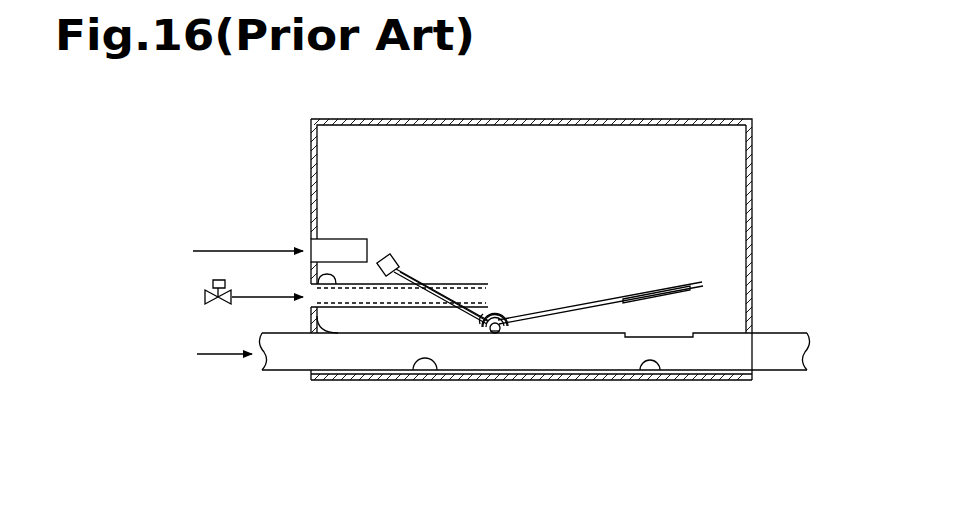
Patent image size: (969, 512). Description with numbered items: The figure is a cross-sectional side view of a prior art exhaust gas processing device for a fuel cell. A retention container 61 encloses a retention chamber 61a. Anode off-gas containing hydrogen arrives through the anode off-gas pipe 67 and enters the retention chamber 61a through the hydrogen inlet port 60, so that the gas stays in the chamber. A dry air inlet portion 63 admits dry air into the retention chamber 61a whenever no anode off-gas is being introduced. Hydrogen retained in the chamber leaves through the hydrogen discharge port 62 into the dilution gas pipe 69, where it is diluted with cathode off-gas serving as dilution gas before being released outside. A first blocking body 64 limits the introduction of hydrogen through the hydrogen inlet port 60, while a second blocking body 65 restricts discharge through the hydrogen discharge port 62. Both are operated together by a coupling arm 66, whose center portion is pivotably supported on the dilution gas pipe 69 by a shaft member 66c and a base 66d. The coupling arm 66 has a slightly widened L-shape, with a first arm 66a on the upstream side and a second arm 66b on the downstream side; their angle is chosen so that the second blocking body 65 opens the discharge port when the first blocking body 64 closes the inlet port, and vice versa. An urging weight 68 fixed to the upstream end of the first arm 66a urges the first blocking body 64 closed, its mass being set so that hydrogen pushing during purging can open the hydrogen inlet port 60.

The retention container 61 is at (611, 119).
The retention chamber 61a is at (571, 170).
The hydrogen discharge port 62 is at (672, 334).
The dry air inlet portion 63 is at (333, 239).
The first blocking body 64 is at (466, 296).
The second blocking body 65 is at (652, 297).
The coupling arm 66 is at (540, 266).
The first arm 66a is at (492, 311).
The second arm 66b is at (580, 306).
The shaft member 66c is at (498, 333).
The base 66d is at (489, 331).
The anode off-gas pipe 67 is at (311, 281).
The urging weight 68 is at (392, 256).
The dilution gas pipe 69 is at (311, 323).
The hydrogen inlet port 60 is at (433, 287).